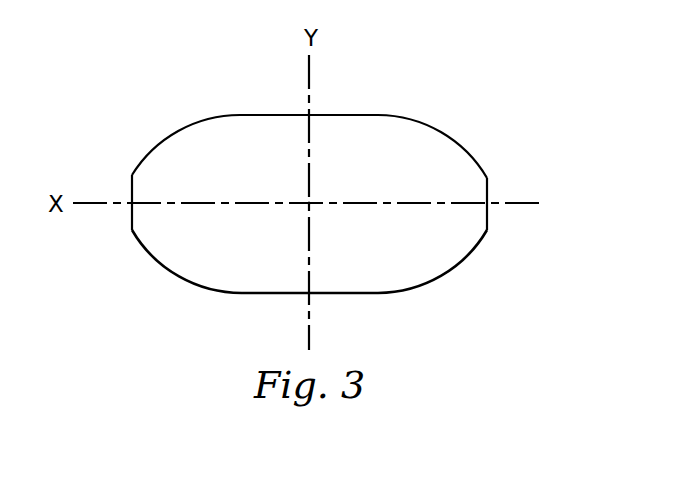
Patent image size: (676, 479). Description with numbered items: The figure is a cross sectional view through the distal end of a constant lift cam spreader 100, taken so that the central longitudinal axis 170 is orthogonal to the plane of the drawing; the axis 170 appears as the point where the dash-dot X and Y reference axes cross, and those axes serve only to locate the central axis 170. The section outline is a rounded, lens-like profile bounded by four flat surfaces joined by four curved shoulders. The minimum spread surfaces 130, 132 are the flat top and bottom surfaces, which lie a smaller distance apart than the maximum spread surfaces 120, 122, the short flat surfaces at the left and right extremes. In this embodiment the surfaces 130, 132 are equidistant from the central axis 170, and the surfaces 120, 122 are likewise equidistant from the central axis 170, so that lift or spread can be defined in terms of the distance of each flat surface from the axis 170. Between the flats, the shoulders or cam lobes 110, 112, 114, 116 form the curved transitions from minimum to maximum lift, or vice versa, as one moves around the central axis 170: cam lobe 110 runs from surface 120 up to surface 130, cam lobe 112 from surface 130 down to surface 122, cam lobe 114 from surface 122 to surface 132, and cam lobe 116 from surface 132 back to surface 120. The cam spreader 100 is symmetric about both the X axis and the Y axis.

The constant lift cam spreader 100 is at (215, 68).
The cam lobe 110 is at (183, 132).
The cam lobe 112 is at (438, 133).
The cam lobe 114 is at (438, 276).
The cam lobe 116 is at (181, 276).
The maximum spread surface 120 is at (130, 218).
The maximum spread surface 122 is at (489, 190).
The minimum spread surface 130 is at (357, 115).
The minimum spread surface 132 is at (357, 295).
The central longitudinal axis 170 is at (315, 197).